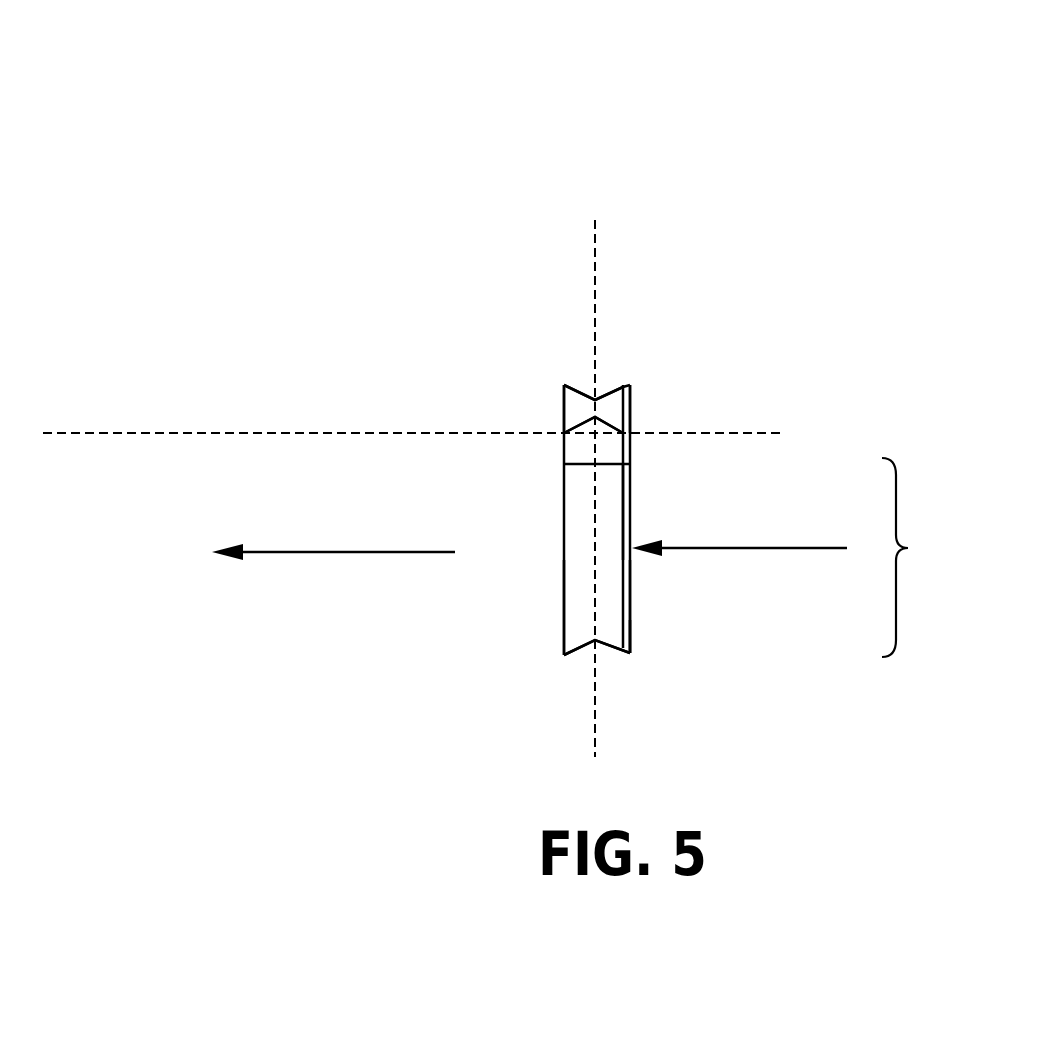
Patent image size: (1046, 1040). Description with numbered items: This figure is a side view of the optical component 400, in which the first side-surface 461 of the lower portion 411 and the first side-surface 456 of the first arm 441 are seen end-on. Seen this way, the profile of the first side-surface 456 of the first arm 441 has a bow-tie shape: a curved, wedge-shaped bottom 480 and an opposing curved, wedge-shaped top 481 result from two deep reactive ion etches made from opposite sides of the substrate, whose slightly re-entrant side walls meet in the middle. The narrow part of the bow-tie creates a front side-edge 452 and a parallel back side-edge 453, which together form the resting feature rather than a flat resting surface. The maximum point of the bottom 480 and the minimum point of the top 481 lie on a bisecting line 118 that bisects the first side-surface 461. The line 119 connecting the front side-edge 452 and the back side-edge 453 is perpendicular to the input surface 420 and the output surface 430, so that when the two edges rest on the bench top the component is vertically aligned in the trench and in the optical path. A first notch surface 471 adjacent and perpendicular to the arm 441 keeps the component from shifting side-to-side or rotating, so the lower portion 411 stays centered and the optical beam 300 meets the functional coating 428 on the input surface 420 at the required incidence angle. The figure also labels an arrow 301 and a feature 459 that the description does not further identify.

The optical component 400 is at (560, 112).
The bisecting line 118 is at (593, 252).
The line connecting front side-edge and back side-edge 119 is at (285, 433).
The curved top 481 is at (576, 340).
The first side-surface of the first arm 456 is at (630, 393).
The front side-edge 452 is at (630, 430).
The first arm 441 is at (782, 410).
The back side-edge 453 is at (564, 433).
The first notch surface 471 is at (570, 440).
The first side-surface of the lower portion 461 is at (630, 517).
The curved bottom 480 is at (585, 455).
The optical beam 300 is at (750, 548).
The fluid flow 301 is at (318, 552).
The lower portion 411 is at (916, 557).
The output surface 430 is at (564, 628).
The input surface 420 is at (630, 628).
The second end surface 459 is at (590, 644).
The functional coating 428 is at (637, 643).